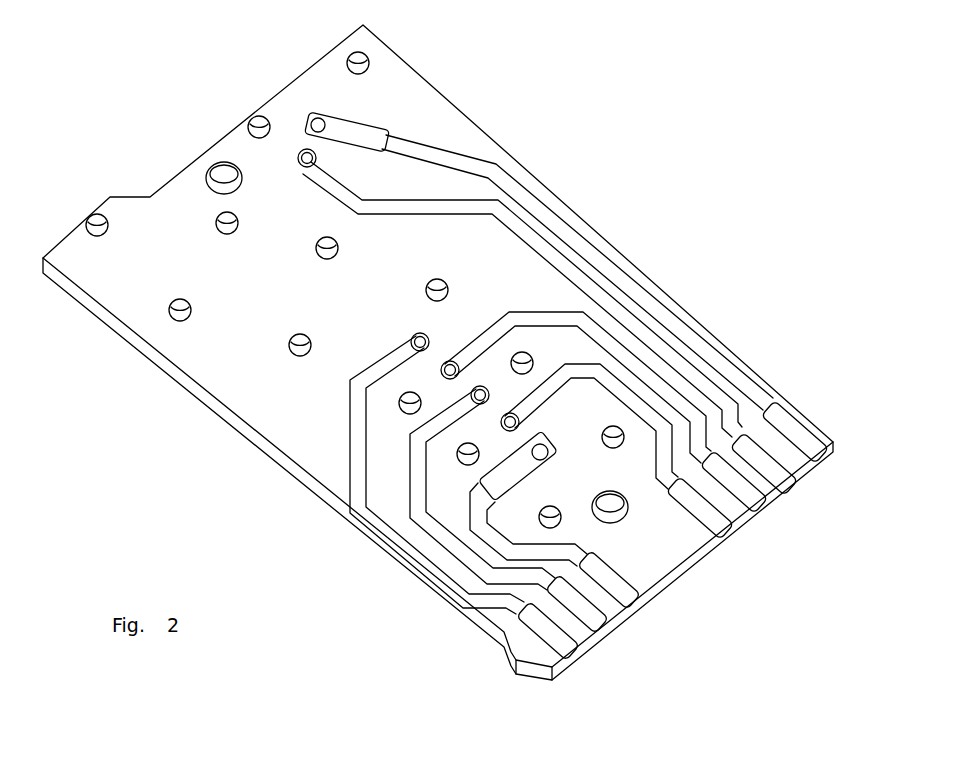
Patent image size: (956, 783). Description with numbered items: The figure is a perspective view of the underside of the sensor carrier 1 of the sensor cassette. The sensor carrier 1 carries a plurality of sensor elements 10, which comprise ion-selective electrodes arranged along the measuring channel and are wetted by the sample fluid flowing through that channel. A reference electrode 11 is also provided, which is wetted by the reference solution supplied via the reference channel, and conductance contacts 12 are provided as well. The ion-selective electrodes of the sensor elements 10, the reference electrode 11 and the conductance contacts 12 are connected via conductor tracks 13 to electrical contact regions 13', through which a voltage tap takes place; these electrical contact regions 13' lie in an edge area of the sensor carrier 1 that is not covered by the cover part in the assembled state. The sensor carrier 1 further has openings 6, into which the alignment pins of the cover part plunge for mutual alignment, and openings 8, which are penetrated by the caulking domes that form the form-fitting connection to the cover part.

The sensor carrier 1 is at (115, 295).
The openings 6 is at (219, 162).
The openings 8 is at (95, 213).
The sensor elements 10 is at (416, 333).
The reference electrode 11 is at (304, 149).
The conductance contacts 12 is at (355, 132).
The conductor tracks 13 is at (538, 374).
The electrical contact regions 13' is at (685, 552).